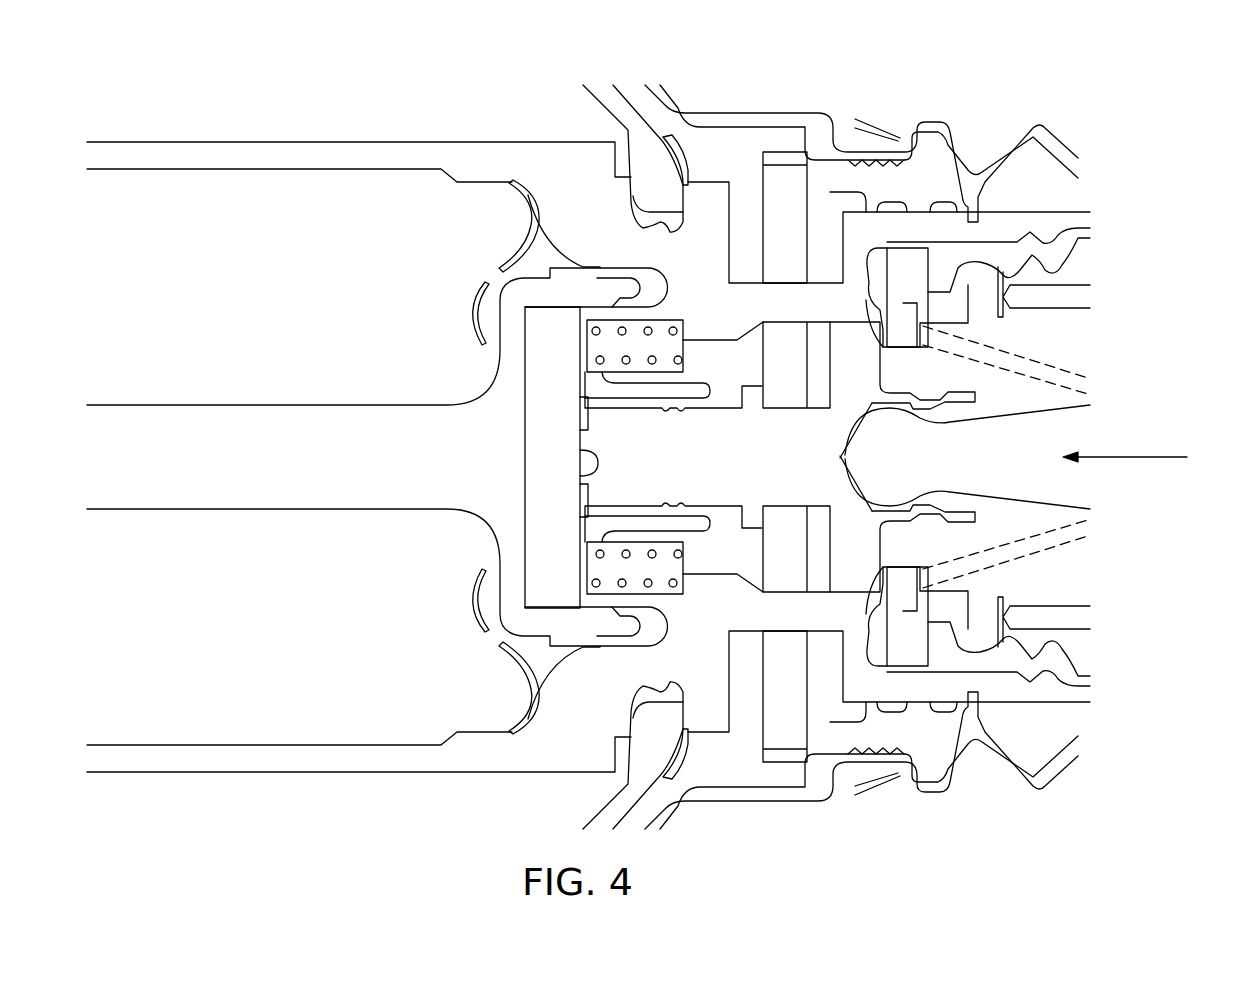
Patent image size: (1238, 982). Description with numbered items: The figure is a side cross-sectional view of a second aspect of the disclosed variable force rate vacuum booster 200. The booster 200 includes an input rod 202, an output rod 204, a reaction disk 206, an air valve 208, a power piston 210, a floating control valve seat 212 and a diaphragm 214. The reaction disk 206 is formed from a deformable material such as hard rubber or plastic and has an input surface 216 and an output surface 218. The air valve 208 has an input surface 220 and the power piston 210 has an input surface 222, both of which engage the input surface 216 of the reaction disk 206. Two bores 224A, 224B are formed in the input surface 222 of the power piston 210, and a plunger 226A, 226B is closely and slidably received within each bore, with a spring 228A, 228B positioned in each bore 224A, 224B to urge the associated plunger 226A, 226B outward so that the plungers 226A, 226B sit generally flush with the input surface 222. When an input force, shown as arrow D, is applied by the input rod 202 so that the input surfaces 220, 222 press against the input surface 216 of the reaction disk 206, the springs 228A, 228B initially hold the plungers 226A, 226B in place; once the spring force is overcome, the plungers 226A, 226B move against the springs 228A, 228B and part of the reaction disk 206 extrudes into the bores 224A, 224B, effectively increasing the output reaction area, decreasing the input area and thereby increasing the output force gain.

The variable force rate vacuum booster 200 is at (1091, 103).
The input rod 202 is at (1030, 450).
The output rod 204 is at (290, 493).
The reaction disk 206 is at (535, 460).
The air valve 208 is at (770, 470).
The power piston 210 is at (698, 245).
The floating control valve seat 212 is at (905, 270).
The diaphragm 214 is at (506, 255).
The input surface 216 is at (583, 403).
The output surface 218 is at (530, 343).
The input surface 220 is at (596, 466).
The input surface 222 is at (600, 305).
The bore 224A is at (685, 320).
The bore 224B is at (685, 598).
The plunger 226A is at (583, 332).
The plunger 226B is at (583, 570).
The spring 228A is at (655, 364).
The spring 228B is at (655, 550).
The input force D is at (1134, 455).